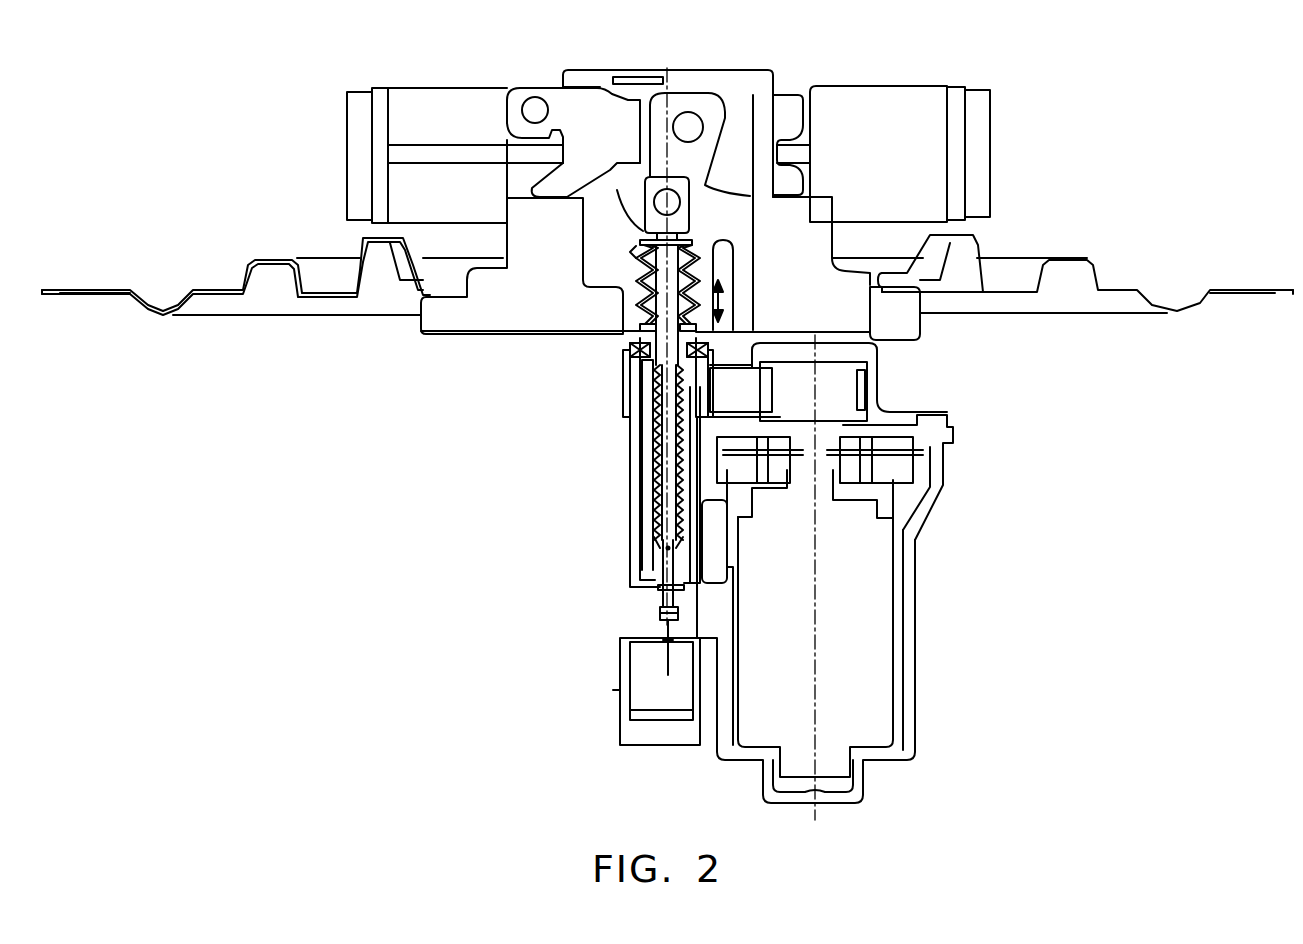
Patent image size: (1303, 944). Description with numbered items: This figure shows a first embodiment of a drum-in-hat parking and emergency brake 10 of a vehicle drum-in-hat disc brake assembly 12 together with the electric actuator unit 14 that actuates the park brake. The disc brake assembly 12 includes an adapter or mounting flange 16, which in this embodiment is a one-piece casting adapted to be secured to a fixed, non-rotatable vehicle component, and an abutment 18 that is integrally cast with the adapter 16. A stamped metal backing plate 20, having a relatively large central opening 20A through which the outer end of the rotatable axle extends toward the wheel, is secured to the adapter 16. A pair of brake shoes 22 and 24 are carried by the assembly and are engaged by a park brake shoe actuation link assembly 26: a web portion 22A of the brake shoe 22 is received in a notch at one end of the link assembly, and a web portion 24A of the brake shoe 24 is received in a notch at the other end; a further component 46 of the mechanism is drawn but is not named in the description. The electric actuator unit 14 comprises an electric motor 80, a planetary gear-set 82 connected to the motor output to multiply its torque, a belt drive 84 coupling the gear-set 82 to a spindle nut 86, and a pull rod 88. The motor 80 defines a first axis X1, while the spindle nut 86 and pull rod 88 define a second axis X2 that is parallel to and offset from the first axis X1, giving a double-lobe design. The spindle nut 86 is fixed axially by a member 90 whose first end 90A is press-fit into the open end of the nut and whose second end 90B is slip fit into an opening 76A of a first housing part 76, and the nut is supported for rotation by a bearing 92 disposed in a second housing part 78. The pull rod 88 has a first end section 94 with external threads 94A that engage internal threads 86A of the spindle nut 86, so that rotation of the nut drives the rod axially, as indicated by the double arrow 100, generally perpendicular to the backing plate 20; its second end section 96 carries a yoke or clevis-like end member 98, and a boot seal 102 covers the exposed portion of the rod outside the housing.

The drum-in-hat parking and emergency brake 10 is at (1035, 190).
The vehicle drum-in-hat disc brake assembly 12 is at (466, 526).
The electric actuator unit 14 is at (928, 668).
The adapter or mounting flange 16 is at (483, 320).
The abutment 18 is at (738, 72).
The backing plate 20 is at (1110, 308).
The central opening 20A is at (866, 287).
The brake shoe 22 is at (437, 82).
The web portion 22A is at (466, 153).
The brake shoe 24 is at (942, 80).
The web portion 24A is at (840, 150).
The park brake shoe actuation link assembly 26 is at (540, 72).
The pivot lever 46 is at (697, 176).
The first housing part 76 is at (897, 757).
The opening 76A is at (658, 613).
The second housing part 78 is at (623, 374).
The electric motor 80 is at (870, 612).
The planetary gear-set 82 is at (882, 422).
The belt drive 84 is at (739, 382).
The spindle nut 86 is at (637, 392).
The internal threads 86A is at (672, 497).
The pull rod 88 is at (663, 297).
The member 90 is at (688, 592).
The first end 90A is at (663, 574).
The second end 90B is at (663, 610).
The bearing 92 is at (620, 343).
The first end section 94 is at (658, 453).
The external threads 94A is at (670, 433).
The second end section 96 is at (709, 272).
The yoke or clevis-like end member 98 is at (692, 230).
The double arrow 100 is at (720, 302).
The boot seal 102 is at (638, 272).
The first axis X1 is at (815, 690).
The second axis X2 is at (670, 548).